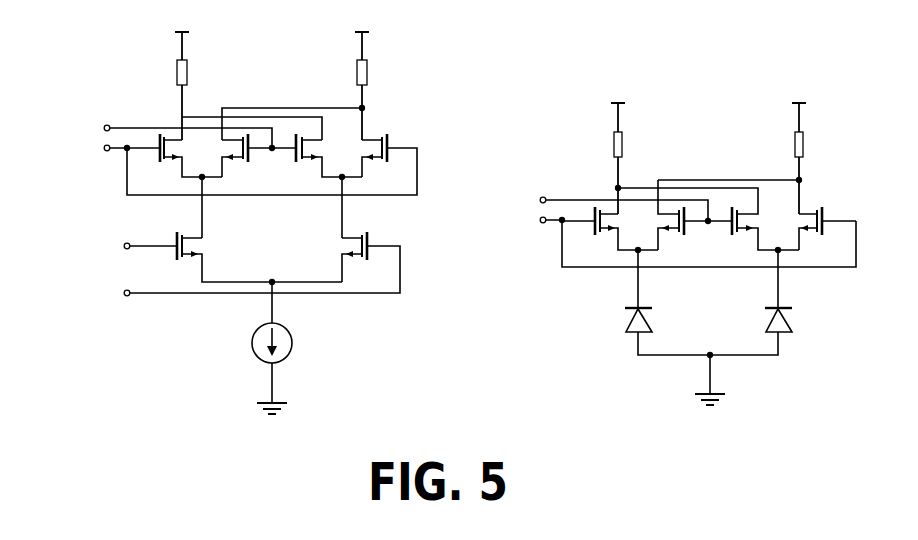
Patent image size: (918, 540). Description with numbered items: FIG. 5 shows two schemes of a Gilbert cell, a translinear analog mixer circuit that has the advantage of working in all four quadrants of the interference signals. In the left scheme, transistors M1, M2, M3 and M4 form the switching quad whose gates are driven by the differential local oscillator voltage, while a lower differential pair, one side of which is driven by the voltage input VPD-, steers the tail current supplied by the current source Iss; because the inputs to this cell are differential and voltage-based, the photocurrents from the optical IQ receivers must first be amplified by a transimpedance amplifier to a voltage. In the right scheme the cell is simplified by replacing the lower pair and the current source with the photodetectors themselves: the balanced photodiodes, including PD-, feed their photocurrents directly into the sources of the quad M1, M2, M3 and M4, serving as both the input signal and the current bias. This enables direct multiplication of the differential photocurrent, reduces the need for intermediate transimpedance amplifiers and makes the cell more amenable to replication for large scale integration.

The first transistor M1 is at (395, 200).
The second transistor M2 is at (477, 197).
The third transistor M3 is at (542, 199).
The fourth transistor M4 is at (609, 198).
The negative photodetector input transistor VPD- is at (226, 269).
The tail current source Iss is at (301, 347).
The negative photodiode PD- is at (749, 302).